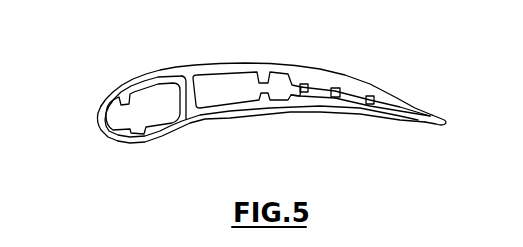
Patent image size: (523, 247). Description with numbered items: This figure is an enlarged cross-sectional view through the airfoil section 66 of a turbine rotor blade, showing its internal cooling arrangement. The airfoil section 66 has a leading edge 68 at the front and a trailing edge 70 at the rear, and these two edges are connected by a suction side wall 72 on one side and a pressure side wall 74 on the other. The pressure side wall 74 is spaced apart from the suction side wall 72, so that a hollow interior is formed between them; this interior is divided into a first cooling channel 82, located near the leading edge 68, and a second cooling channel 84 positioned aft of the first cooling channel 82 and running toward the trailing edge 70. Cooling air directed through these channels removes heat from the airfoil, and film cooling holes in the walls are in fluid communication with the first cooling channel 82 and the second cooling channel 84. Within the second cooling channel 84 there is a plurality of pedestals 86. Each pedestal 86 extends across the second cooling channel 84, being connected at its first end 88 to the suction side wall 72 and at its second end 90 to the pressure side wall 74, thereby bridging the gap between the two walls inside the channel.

The airfoil section 66 is at (256, 98).
The leading edge 68 is at (97, 126).
The trailing edge 70 is at (442, 126).
The suction side wall 72 is at (283, 64).
The pressure side wall 74 is at (337, 109).
The first cooling channel 82 is at (158, 112).
The second cooling channel 84 is at (240, 93).
The pedestal 86 is at (309, 86).
The first end 88 is at (340, 88).
The second end 90 is at (328, 100).